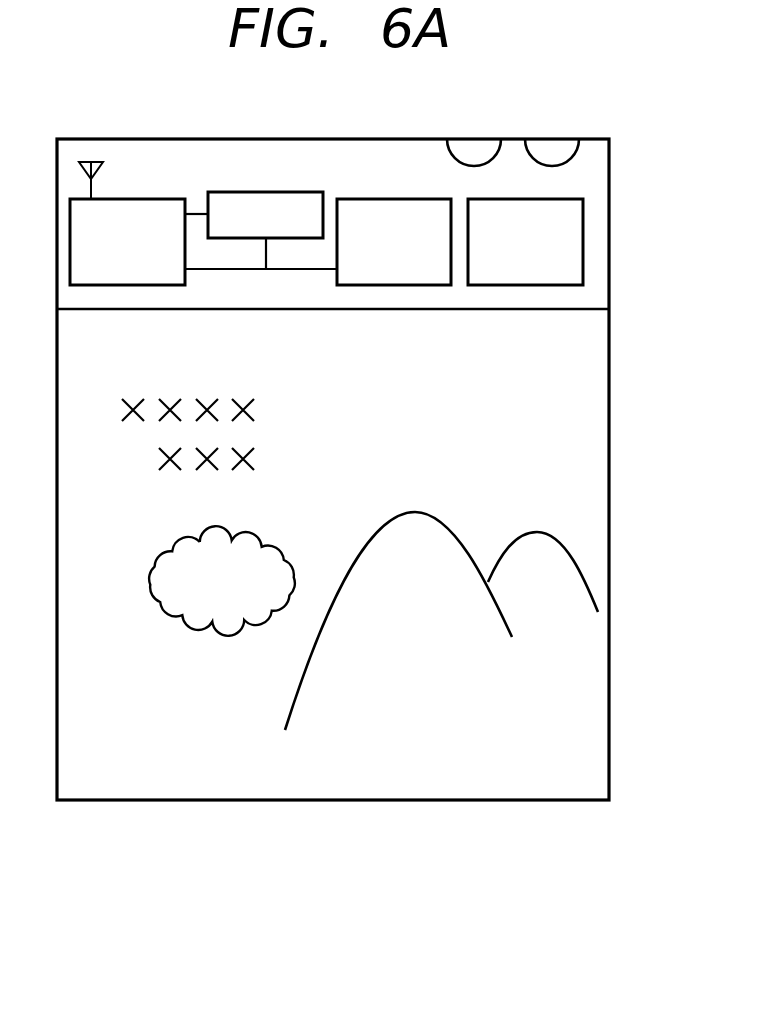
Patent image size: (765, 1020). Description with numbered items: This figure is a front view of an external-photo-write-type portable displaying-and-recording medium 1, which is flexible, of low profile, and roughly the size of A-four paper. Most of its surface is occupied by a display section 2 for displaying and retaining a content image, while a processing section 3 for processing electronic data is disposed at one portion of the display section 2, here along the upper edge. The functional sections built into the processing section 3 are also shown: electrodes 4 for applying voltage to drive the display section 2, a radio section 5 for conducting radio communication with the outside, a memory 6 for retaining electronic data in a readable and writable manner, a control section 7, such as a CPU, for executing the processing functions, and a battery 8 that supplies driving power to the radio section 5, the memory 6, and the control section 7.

The portable displaying-and-recording medium 1 is at (640, 326).
The display section 2 is at (609, 457).
The processing section 3 is at (610, 185).
The electrodes 4 is at (490, 138).
The radio section 5 is at (163, 199).
The memory 6 is at (280, 192).
The control section 7 is at (402, 199).
The battery 8 is at (468, 199).